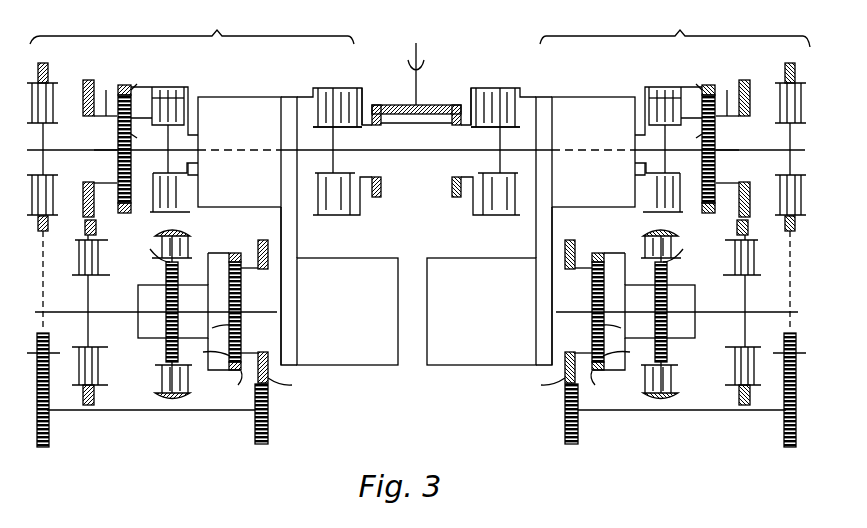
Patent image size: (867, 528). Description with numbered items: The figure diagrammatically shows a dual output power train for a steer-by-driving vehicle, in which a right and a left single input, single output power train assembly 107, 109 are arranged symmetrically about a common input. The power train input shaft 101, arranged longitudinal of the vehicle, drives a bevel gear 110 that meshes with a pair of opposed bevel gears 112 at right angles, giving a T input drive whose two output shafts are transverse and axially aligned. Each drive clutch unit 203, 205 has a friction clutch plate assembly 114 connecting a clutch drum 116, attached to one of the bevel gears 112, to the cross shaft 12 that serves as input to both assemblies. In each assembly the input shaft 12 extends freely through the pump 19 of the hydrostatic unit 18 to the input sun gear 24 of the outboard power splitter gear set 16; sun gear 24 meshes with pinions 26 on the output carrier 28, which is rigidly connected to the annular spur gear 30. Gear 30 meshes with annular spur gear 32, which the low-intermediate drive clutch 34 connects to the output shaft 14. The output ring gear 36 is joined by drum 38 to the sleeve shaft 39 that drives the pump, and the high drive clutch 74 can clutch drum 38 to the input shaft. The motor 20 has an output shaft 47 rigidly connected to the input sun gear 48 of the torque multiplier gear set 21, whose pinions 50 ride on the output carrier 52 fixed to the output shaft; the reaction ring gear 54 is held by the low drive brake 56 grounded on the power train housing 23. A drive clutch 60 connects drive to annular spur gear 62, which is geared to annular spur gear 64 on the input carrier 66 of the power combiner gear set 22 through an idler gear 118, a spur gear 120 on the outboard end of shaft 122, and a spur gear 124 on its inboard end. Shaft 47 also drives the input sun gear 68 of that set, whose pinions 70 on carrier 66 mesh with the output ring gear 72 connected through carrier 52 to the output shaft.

The left single input, single output power train assembly 109 is at (212, 33).
The right single input, single output power train assembly 107 is at (676, 33).
The motor 20 is at (420, 246).
The pump 19 is at (230, 97).
The hydrostatic unit 18 is at (275, 76).
The drive clutch 60 is at (30, 107).
The annular spur gear 62 is at (36, 215).
The spur gear 120 is at (38, 403).
The annular spur gear 30 is at (88, 80).
The output carrier 28 is at (420, 92).
The input sun gear 24 is at (118, 148).
The annular spur gear 32 is at (92, 166).
The low-intermediate drive clutch 34 is at (78, 258).
The output shaft 14 is at (88, 305).
The power splitter gear set 16 is at (124, 85).
The pinions 26 is at (416, 141).
The output ring gear 36 is at (135, 86).
The drum 38 is at (183, 87).
The high drive clutch 74 is at (162, 112).
The power train housing 23 is at (160, 226).
The sleeve shaft 39 is at (193, 170).
The power train input shaft 101 is at (417, 48).
The bevel gear 110 is at (404, 93).
The opposed bevel gears 112 is at (422, 123).
The clutch 205 is at (336, 88).
The clutch 203 is at (496, 88).
The friction clutch plate assembly 114 is at (320, 108).
The clutch drum 116 is at (362, 88).
The input shaft 12 is at (457, 163).
The low drive brake 56 is at (190, 232).
The pinions 50 is at (166, 296).
The power combiner gear set 22 is at (192, 390).
The torque multiplier gear set 21 is at (152, 284).
The input sun gear 48 is at (210, 292).
The output carrier 52 is at (229, 256).
The motor output shaft 47 is at (264, 280).
The input carrier 66 is at (265, 352).
The spur gear 124 is at (270, 430).
The input sun gear 68 is at (422, 329).
The pinions 70 is at (410, 350).
The output ring gear 72 is at (419, 390).
The annular spur gear 64 is at (416, 389).
The reaction ring gear 54 is at (427, 256).
The idler gear 118 is at (35, 312).
The shaft 122 is at (195, 410).